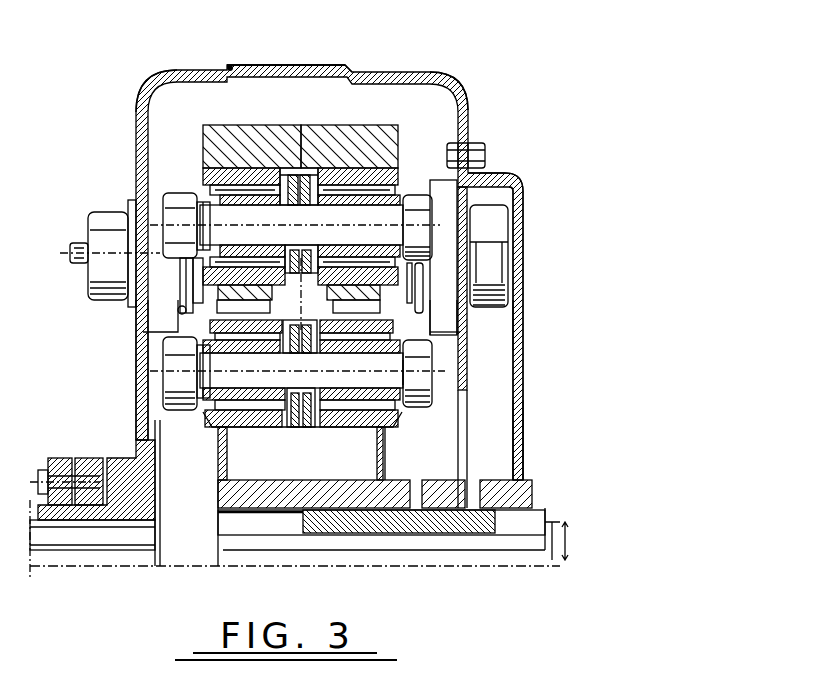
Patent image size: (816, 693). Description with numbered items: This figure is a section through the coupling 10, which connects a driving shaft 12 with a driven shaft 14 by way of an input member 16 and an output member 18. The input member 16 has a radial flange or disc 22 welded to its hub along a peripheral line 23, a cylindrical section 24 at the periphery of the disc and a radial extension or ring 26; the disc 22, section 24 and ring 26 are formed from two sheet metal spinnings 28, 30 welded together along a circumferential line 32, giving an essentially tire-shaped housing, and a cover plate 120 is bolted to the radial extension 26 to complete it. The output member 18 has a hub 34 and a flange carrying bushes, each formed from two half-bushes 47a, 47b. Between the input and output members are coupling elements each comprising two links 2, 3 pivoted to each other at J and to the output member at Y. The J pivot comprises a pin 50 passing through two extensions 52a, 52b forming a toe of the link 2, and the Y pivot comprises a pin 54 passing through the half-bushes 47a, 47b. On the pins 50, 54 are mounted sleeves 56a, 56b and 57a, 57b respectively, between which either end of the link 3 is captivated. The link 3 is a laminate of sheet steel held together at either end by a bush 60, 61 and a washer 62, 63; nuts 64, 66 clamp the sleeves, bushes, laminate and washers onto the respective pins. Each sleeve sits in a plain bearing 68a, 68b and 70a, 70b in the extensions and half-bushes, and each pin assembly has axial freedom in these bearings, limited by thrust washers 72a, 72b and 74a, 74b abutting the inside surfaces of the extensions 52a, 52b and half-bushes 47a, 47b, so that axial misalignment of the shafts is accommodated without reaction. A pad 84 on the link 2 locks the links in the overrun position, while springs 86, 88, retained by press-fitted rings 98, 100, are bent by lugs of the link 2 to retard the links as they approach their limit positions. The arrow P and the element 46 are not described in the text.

The link 2 is at (207, 177).
The link 3 is at (300, 295).
The coupling 10 is at (332, 51).
The driving shaft 12 is at (118, 552).
The driven shaft 14 is at (395, 550).
The input member 16 is at (177, 462).
The output member 18 is at (208, 492).
The radial flange or disc 22 is at (135, 390).
The peripheral line 23 is at (138, 438).
The cylindrical section 24 is at (375, 72).
The radial extension or ring 26 is at (505, 183).
The sheet metal spinning 28 is at (145, 95).
The sheet metal spinning 30 is at (455, 95).
The circumferential line 32 is at (229, 67).
The hub 34 is at (462, 480).
The adjusting nut 46 is at (97, 217).
The half-bush 47a is at (237, 423).
The half-bush 47b is at (384, 433).
The pin 50 is at (388, 212).
The extension 52a is at (227, 170).
The extension 52b is at (342, 172).
The pin 54 is at (407, 378).
The sleeve 56a is at (224, 205).
The sleeve 56b is at (388, 160).
The sleeve 57a is at (248, 340).
The sleeve 57b is at (347, 343).
The bush 60 is at (295, 172).
The bush 61 is at (290, 422).
The washer 62 is at (310, 172).
The washer 63 is at (303, 422).
The nut 64 is at (167, 200).
The nut 66 is at (177, 400).
The plain bearing 68a is at (263, 258).
The plain bearing 68b is at (317, 252).
The plain bearing 70a is at (232, 430).
The plain bearing 70b is at (395, 418).
The thrust washer 72a is at (273, 173).
The thrust washer 72b is at (323, 252).
The thrust washer 74a is at (287, 343).
The thrust washer 74b is at (322, 343).
The pad 84 is at (380, 303).
The spring 86 is at (183, 290).
The spring 88 is at (418, 268).
The ring 98 is at (182, 312).
The ring 100 is at (407, 280).
The cover plate 120 is at (527, 422).
The pivot J is at (380, 225).
The direction P is at (538, 323).
The pivot Y is at (425, 372).